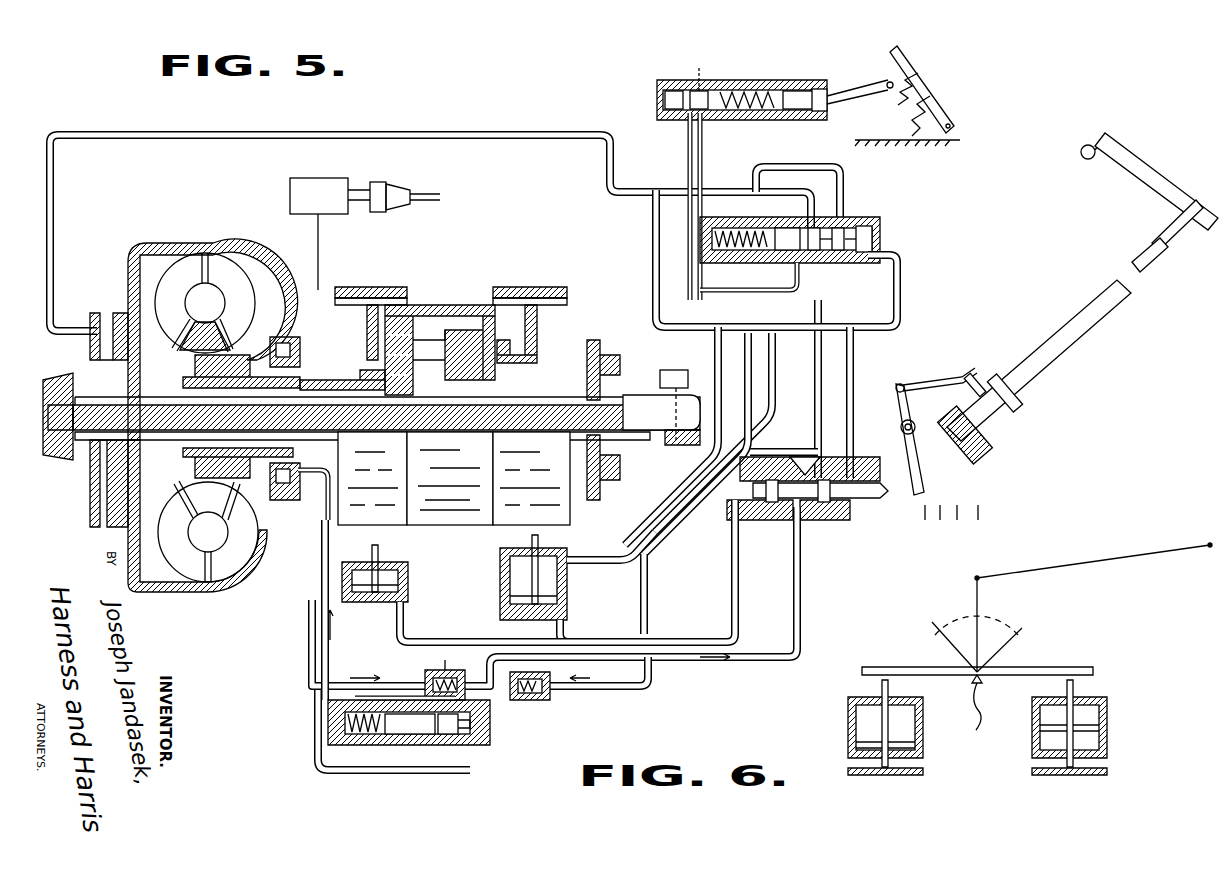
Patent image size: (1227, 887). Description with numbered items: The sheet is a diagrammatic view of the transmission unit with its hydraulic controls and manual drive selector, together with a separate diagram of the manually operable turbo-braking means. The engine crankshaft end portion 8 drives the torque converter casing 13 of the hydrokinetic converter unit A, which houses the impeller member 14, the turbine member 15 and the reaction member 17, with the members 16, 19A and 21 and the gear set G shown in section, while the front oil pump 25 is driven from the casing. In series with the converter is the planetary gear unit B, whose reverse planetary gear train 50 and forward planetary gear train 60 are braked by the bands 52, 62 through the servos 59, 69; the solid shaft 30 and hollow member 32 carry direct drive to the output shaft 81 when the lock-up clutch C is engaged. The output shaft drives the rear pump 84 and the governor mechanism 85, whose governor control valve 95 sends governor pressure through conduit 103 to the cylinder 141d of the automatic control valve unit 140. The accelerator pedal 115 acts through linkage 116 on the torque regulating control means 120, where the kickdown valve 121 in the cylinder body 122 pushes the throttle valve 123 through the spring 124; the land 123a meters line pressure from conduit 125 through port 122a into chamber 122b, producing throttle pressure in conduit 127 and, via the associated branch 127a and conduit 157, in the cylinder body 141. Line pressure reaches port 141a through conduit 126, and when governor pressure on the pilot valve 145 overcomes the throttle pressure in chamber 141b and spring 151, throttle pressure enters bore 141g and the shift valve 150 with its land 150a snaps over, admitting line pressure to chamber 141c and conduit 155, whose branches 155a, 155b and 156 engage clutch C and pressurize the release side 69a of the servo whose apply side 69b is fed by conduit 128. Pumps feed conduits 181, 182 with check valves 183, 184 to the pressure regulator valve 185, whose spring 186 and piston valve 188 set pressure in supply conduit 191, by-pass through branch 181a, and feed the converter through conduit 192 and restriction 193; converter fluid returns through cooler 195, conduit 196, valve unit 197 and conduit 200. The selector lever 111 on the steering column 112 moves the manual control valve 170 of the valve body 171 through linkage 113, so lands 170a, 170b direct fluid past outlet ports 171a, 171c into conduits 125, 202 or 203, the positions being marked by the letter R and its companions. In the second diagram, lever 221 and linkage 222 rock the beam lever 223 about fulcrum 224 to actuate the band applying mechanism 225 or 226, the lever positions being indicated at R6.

In FIG. 5, the driving member end portion 8 is at (55, 458).
In FIG. 5, the torque converter casing 13 is at (150, 244).
In FIG. 5, the impeller member 14 is at (249, 307).
In FIG. 5, the turbine or runner member 15 is at (176, 307).
In FIG. 5, the sleeve 16 is at (228, 360).
In FIG. 5, the guide wheel or reaction member 17 is at (205, 336).
In FIG. 5, the bearing 19A is at (310, 305).
In FIG. 5, the sleeve 21 is at (200, 465).
In FIG. 5, the gear type oil pump 25 is at (286, 500).
In FIG. 5, the solid shaft 30 is at (240, 425).
In FIG. 5, the axially extending hollow member 32 is at (352, 360).
In FIG. 5, the reverse drive planetary gear train 50 is at (364, 351).
In FIG. 5, the reverse drive brake band 52 is at (385, 285).
In FIG. 6, the reverse drive brake band 52 is at (855, 775).
In FIG. 5, the reverse drive servo 59 is at (408, 568).
In FIG. 6, the reverse drive servo 59 is at (856, 722).
In FIG. 5, the forward drive planetary gear train 60 is at (542, 335).
In FIG. 5, the forward drive brake band 62 is at (517, 285).
In FIG. 6, the forward drive brake band 62 is at (1107, 772).
In FIG. 5, the forward drive servo 69 is at (494, 573).
In FIG. 6, the forward drive servo 69 is at (1099, 716).
In FIG. 5, the release side chamber of servo 69a is at (580, 556).
In FIG. 5, the apply side chamber of servo 69b is at (566, 638).
In FIG. 5, the output shaft 81 is at (661, 412).
In FIG. 5, the second gear type oil pump 84 is at (620, 360).
In FIG. 5, the governor mechanism 85 is at (679, 364).
In FIG. 5, the governor control valve 95 is at (679, 451).
In FIG. 5, the outlet conduit 103 is at (898, 292).
In FIG. 5, the drive selector lever 111 is at (1080, 152).
In FIG. 5, the vehicle steering column 112 is at (1110, 300).
In FIG. 5, the linkage arrangement 113 is at (898, 380).
In FIG. 5, the accelerator pedal 115 is at (895, 58).
In FIG. 5, the linkage 116 is at (868, 78).
In FIG. 5, the torque regulating control means 120 is at (658, 90).
In FIG. 5, the kickdown valve 121 is at (823, 82).
In FIG. 5, the valve cylinder body 122 is at (774, 88).
In FIG. 5, the line pressure inlet port 122a is at (735, 88).
In FIG. 5, the chamber of valve cylinder 122b is at (663, 100).
In FIG. 5, the throttle valve 123 is at (705, 88).
In FIG. 5, the throttle valve land 123a is at (698, 88).
In FIG. 5, the preloaded compression spring 124 is at (800, 88).
In FIG. 5, the supply conduit 125 is at (688, 150).
In FIG. 5, the conduit 126 is at (800, 278).
In FIG. 5, the conduit 127 is at (705, 152).
In FIG. 5, the conduit 127a is at (775, 398).
In FIG. 5, the branch conduit 128 is at (655, 548).
In FIG. 5, the automatic control valve unit 140 is at (880, 235).
In FIG. 5, the cylinder body of automatic control valve 141 is at (760, 260).
In FIG. 5, the line pressure inlet port 141a is at (790, 250).
In FIG. 5, the valve chamber 141b is at (735, 215).
In FIG. 5, the chamber of valve cylinder 141c is at (818, 228).
In FIG. 5, the cylinder 141d is at (875, 222).
In FIG. 5, the bore portion of cylinder 141g is at (858, 220).
In FIG. 5, the pilot valve 145 is at (862, 252).
In FIG. 5, the shift valve 150 is at (814, 252).
In FIG. 5, the shift valve land 150a is at (787, 228).
In FIG. 5, the spring 151 is at (735, 262).
In FIG. 5, the conduit 155 is at (745, 192).
In FIG. 5, the branch conduit 155a is at (450, 135).
In FIG. 5, the branch conduit 155b is at (740, 405).
In FIG. 5, the conduit 156 is at (812, 190).
In FIG. 5, the conduit 157 is at (840, 172).
In FIG. 5, the manually operated control valve 170 is at (860, 500).
In FIG. 5, the valve land 170a is at (825, 500).
In FIG. 5, the valve land 170b is at (765, 500).
In FIG. 5, the selector valve body 171 is at (803, 488).
In FIG. 5, the outlet port 171a is at (830, 470).
In FIG. 5, the outlet port 171c is at (855, 476).
In FIG. 5, the conduit 181 is at (320, 636).
In FIG. 5, the branch conduit 181a is at (400, 700).
In FIG. 5, the conduit 182 is at (648, 672).
In FIG. 5, the check valve 183 is at (448, 660).
In FIG. 5, the check valve 184 is at (540, 672).
In FIG. 5, the pressure regulator valve unit 185 is at (468, 748).
In FIG. 5, the spring 186 is at (355, 735).
In FIG. 5, the piston valve 188 is at (405, 735).
In FIG. 5, the line pressure fluid supply conduit 191 is at (800, 585).
In FIG. 5, the conduit 192 is at (320, 612).
In FIG. 5, the restriction 193 is at (315, 730).
In FIG. 5, the pressure fluid cooling means 195 is at (338, 203).
In FIG. 5, the conduit 196 is at (362, 205).
In FIG. 5, the valve unit 197 is at (395, 182).
In FIG. 5, the conduit 200 is at (430, 205).
In FIG. 5, the reverse drive supply conduit 202 is at (734, 598).
In FIG. 5, the coast drive supply conduit 203 is at (852, 300).
In FIG. 6, the manually operable control lever 221 is at (975, 588).
In FIG. 6, the control linkage 222 is at (1120, 560).
In FIG. 6, the beam lever 223 is at (1093, 668).
In FIG. 6, the fulcrum point 224 is at (988, 703).
In FIG. 6, the brake band applying mechanism 225 is at (880, 686).
In FIG. 6, the brake band applying mechanism 226 is at (1075, 688).
In FIG. 5, the hydrokinetic torque converter unit A is at (230, 274).
In FIG. 5, the planetary gear unit B is at (208, 531).
In FIG. 5, the torque converter lock-up clutch C is at (110, 324).
In FIG. 5, the gear set G is at (454, 478).
In FIG. 5, the reverse position R is at (950, 520).
In FIG. 6, the lever positions R6 is at (982, 636).